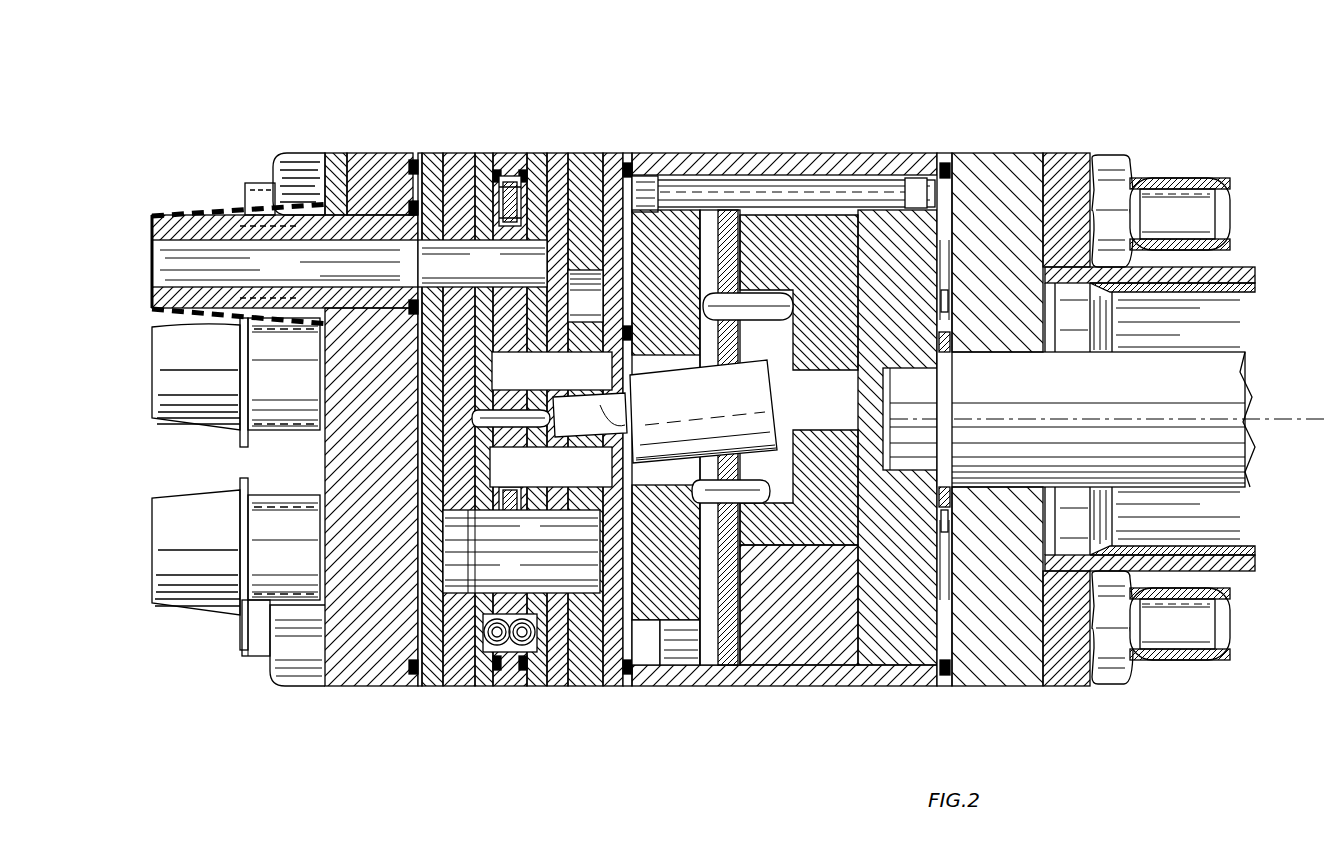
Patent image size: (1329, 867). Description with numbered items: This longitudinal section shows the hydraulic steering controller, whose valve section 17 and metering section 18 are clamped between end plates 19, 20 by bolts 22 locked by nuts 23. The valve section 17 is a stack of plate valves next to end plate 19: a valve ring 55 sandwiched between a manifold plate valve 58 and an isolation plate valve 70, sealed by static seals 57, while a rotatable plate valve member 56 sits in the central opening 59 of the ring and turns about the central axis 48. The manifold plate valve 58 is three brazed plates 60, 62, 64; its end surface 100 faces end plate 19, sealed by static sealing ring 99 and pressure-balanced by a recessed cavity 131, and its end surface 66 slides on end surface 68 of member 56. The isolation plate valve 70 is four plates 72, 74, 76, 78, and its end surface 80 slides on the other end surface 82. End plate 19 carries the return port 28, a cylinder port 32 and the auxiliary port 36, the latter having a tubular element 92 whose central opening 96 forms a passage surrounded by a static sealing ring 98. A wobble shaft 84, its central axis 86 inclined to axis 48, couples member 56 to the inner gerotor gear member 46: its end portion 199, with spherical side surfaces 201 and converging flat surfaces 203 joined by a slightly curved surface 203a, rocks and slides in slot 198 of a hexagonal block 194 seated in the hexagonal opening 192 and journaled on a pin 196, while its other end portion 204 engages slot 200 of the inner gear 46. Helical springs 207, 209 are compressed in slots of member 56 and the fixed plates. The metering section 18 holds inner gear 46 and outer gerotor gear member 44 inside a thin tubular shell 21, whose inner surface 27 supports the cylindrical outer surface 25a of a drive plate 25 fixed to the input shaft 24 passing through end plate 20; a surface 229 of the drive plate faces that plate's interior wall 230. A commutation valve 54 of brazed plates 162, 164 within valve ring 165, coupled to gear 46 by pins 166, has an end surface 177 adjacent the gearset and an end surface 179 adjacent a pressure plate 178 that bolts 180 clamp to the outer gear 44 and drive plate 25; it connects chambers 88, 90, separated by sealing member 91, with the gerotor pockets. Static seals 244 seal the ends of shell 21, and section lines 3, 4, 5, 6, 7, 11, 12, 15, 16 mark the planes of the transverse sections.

The valve section 17 is at (362, 672).
The end plate 19 is at (300, 660).
The nuts 23 is at (293, 168).
The auxiliary port 36 is at (166, 206).
The tubular element 92 is at (240, 222).
The central opening 96 is at (343, 210).
The static sealing ring 98 is at (398, 235).
The static sealing ring 99 is at (415, 240).
The end surface 100 is at (348, 236).
The return port 28 is at (268, 434).
The cylinder port 32 is at (255, 608).
The manifold plate valve member 58 is at (455, 160).
The rotatable plate valve member 56 is at (500, 172).
The valve ring 55 is at (508, 128).
The isolation plate valve member 70 is at (548, 168).
The static seals 57 is at (568, 186).
The central opening 59 is at (548, 196).
The end surface 80 is at (548, 222).
The end surface 82 is at (585, 296).
The end surface 66 is at (459, 419).
The end surface 68 is at (510, 419).
The plate 60 is at (422, 622).
The intermediate plate 62 is at (422, 580).
The plate 64 is at (420, 492).
The recessed cavity 131 is at (420, 460).
The hexagonal central opening 192 is at (490, 372).
The hexagonal block 194 is at (552, 371).
The slot 198 is at (594, 371).
The pin 196 is at (551, 467).
The end portion 199 is at (585, 440).
The converging flat surfaces 203 is at (590, 415).
The slightly curved surface 203a is at (618, 490).
The side surfaces 201 is at (632, 433).
The wobble shaft 84 is at (720, 400).
The chamber 88 is at (685, 488).
The plate 74 is at (560, 530).
The helical spring 209 is at (540, 632).
The helical spring 207 is at (470, 688).
The plate 72 is at (546, 690).
The plate 76 is at (590, 688).
The chamber 90 is at (646, 688).
The sealing member 91 is at (626, 330).
The static seals 244 is at (630, 168).
The pressure plate 178 is at (692, 200).
The valve ring 165 is at (778, 165).
The inner gerotor gear member 46 is at (776, 205).
The bolts 180 is at (822, 190).
The plate 162 is at (740, 237).
The plate 164 is at (706, 244).
The end surface 177 is at (745, 275).
The end surface 179 is at (671, 290).
The slot 200 is at (872, 370).
The end portion 204 is at (760, 386).
The pins 166 is at (790, 491).
The plate 78 is at (633, 584).
The commutation valve 54 is at (733, 600).
The outer gerotor gear member 44 is at (816, 688).
The metering section 18 is at (800, 682).
The cylindrical inner surface 27 is at (862, 688).
The tubular shell 21 is at (905, 158).
The drive plate 25 is at (972, 225).
The cylindrical outer surface 25a is at (935, 696).
The surface 229 is at (955, 232).
The interior wall 230 is at (960, 272).
The end plate 20 is at (1010, 662).
The bolts 22 is at (1176, 200).
The central axis 86 is at (930, 380).
The central axis 48 is at (1104, 406).
The input shaft 24 is at (1266, 362).
The section line 3- 3 is at (440, 61).
The section line 4- 4 is at (478, 90).
The section line 5- 5 is at (547, 61).
The section line 6- 6 is at (605, 90).
The section line 7- 7 is at (575, 119).
The section line 11- 11 is at (752, 90).
The steering motor 12 is at (722, 61).
The pump 15 is at (510, 772).
The section line 16- 16 is at (512, 119).